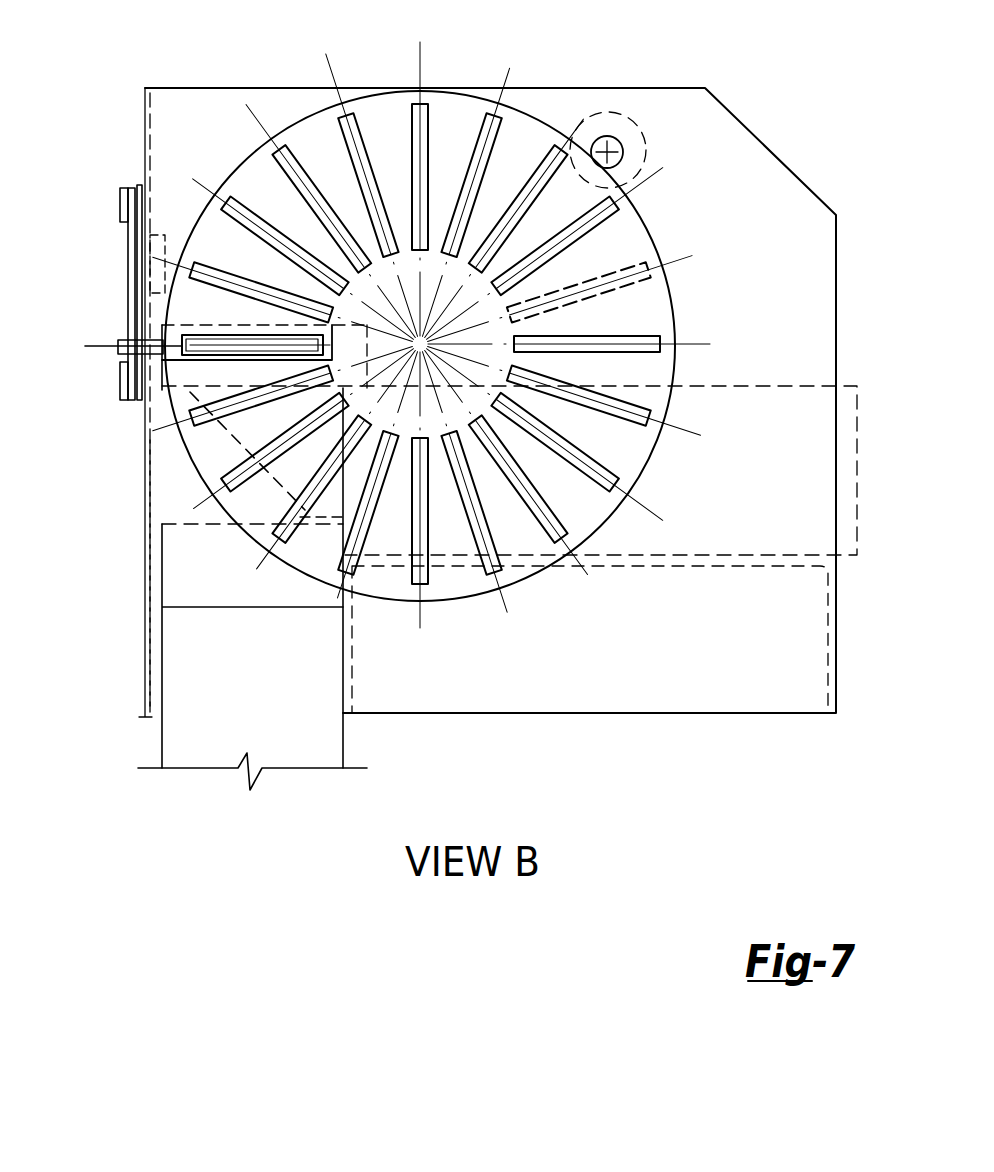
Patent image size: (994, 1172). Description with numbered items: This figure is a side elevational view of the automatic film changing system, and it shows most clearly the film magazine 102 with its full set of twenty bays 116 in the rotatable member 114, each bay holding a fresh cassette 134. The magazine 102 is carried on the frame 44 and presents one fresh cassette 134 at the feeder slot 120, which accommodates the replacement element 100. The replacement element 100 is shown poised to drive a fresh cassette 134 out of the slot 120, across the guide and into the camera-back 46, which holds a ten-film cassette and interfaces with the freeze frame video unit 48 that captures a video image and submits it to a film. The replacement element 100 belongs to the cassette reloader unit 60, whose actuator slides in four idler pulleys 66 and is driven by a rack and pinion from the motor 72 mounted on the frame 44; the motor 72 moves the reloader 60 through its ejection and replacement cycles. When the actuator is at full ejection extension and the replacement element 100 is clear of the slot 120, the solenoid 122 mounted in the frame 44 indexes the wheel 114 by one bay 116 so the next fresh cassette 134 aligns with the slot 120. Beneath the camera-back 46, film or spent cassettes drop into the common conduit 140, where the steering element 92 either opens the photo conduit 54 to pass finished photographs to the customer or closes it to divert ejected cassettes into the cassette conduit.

The frame 44 is at (808, 207).
The camera-back 46 is at (235, 451).
The freeze frame video unit 48 is at (843, 492).
The photo conduit 54 is at (252, 763).
The cassette reloader unit 60 is at (92, 218).
The idler pulleys 66 is at (121, 193).
The motor 72 is at (156, 237).
The steering element 92 is at (178, 578).
The replacement element 100 is at (207, 345).
The film magazine 102 is at (777, 170).
The rotatable member 114 is at (623, 432).
The bays 116 is at (345, 120).
The feeder slot 120 is at (168, 373).
The solenoid 122 is at (635, 130).
The fresh cassettes 134 is at (318, 343).
The common conduit 140 is at (168, 457).